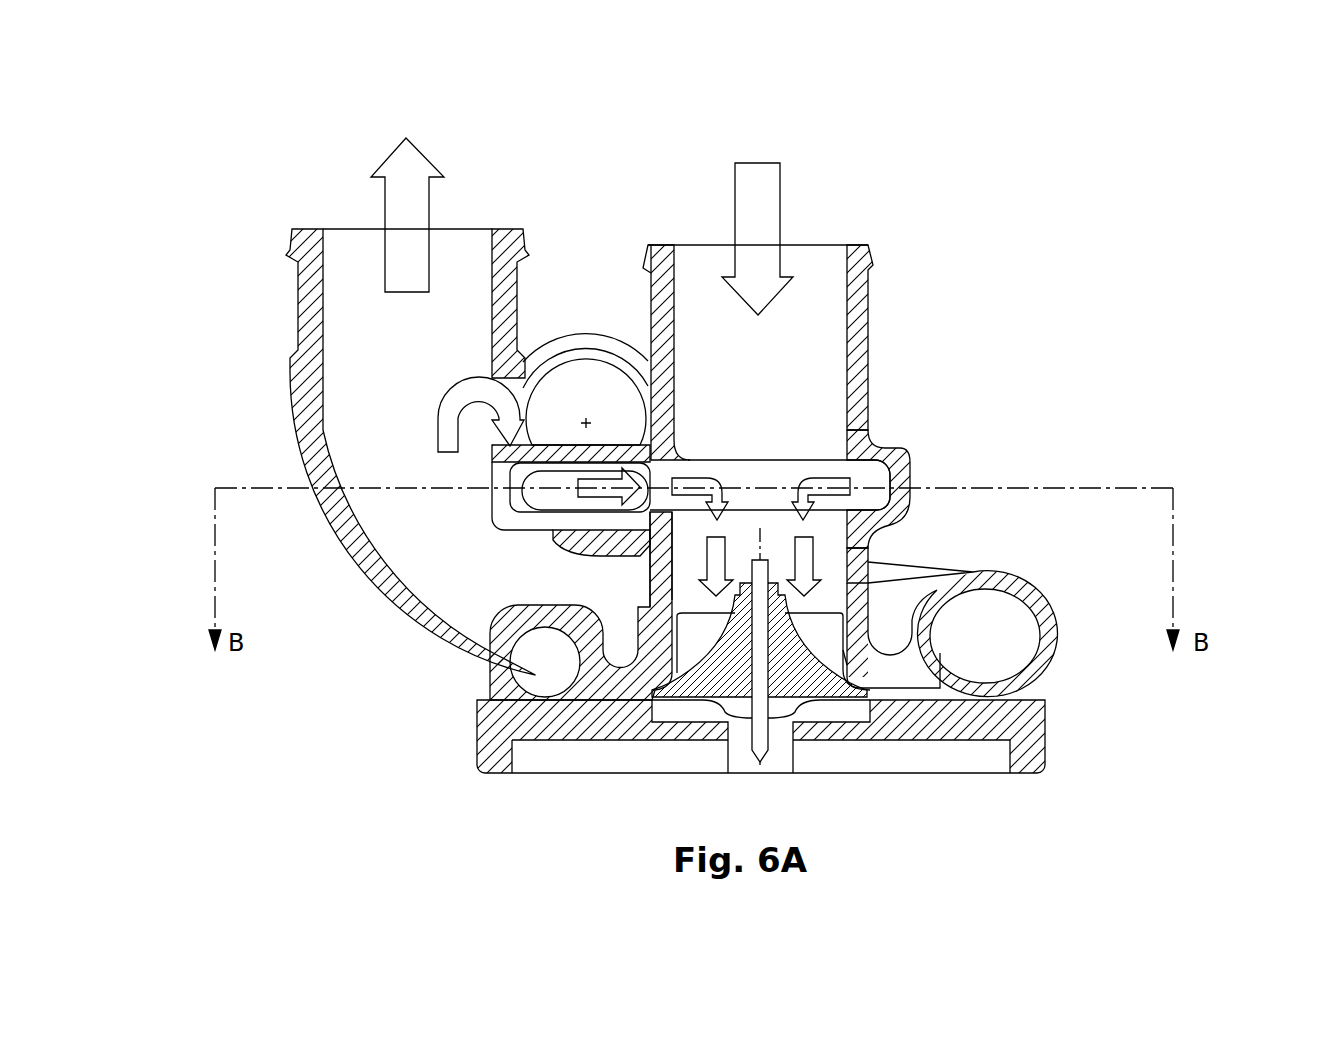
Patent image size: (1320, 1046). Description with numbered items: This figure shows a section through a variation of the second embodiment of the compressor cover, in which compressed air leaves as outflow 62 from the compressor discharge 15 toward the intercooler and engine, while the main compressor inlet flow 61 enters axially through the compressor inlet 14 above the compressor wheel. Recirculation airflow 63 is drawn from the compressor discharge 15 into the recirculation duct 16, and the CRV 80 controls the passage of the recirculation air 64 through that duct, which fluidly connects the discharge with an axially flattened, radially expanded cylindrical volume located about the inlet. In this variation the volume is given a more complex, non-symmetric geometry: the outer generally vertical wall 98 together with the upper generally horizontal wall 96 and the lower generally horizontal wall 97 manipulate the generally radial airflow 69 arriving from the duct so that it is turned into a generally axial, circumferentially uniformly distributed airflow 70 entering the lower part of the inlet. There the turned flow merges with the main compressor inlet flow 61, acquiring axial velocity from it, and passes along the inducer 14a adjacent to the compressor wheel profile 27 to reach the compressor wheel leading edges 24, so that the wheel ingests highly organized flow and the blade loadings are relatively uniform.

The compressor inlet 14 is at (803, 335).
The inducer 14a is at (850, 657).
The compressor discharge 15 is at (452, 318).
The recirculation duct 16 is at (643, 463).
The compressor wheel leading edges 24 is at (871, 452).
The compressor wheel profile 27 is at (833, 657).
The main compressor inlet flow 61 is at (757, 273).
The outflow 62 is at (400, 208).
The recirculation airflow 63 is at (453, 403).
The recirculation air 64 is at (641, 466).
The generally radial airflow 69 is at (717, 505).
The generally axial airflow 70 is at (717, 565).
The CRV 80 is at (588, 410).
The upper generally horizontal wall 96 is at (877, 504).
The lower generally horizontal wall 97 is at (813, 617).
The outer generally vertical wall 98 is at (897, 496).